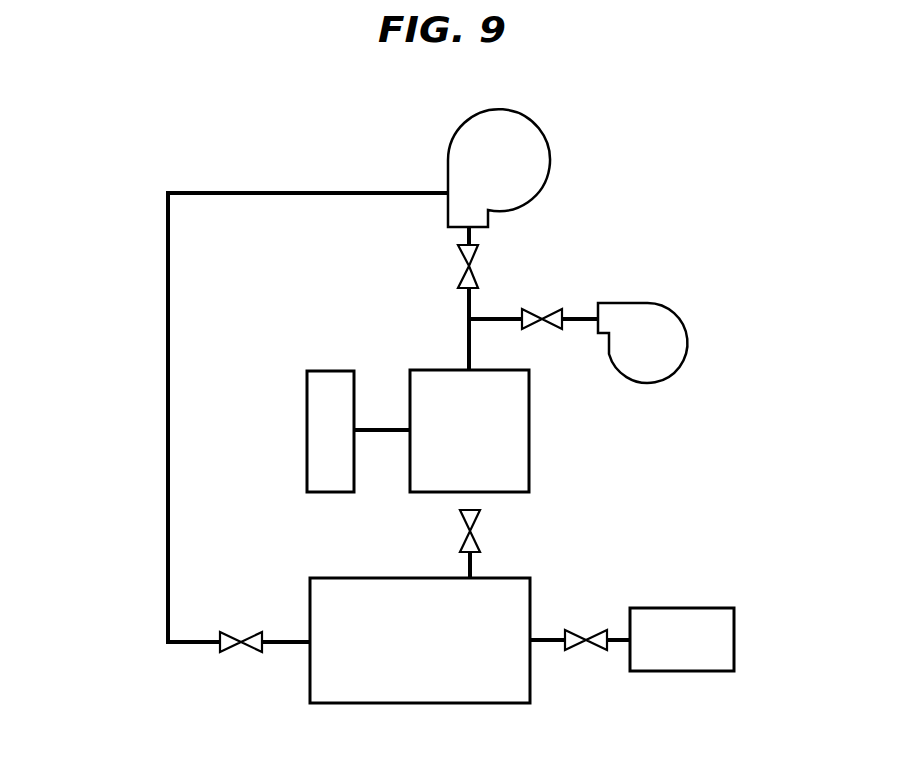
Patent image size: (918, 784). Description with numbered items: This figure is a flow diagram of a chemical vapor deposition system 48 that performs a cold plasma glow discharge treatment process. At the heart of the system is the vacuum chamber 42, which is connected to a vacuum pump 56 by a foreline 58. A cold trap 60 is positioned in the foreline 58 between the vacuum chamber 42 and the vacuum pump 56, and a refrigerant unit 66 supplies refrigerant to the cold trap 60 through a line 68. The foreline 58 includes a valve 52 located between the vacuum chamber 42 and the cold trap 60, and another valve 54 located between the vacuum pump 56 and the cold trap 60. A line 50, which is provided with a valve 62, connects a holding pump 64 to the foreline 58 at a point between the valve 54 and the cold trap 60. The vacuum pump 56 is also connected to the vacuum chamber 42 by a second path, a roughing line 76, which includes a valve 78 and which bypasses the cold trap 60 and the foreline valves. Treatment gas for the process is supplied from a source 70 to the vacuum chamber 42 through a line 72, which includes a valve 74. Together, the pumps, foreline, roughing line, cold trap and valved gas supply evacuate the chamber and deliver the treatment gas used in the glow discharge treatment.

The vacuum chamber 42 is at (458, 704).
The chemical vapor deposition system 48 is at (138, 406).
The line 50 is at (580, 318).
The valve 52 is at (468, 531).
The valve 54 is at (472, 268).
The vacuum pump 56 is at (543, 132).
The foreline 58 is at (472, 568).
The cold trap 60 is at (529, 455).
The valve 62 is at (540, 322).
The holding pump 64 is at (686, 330).
The refrigerant unit 66 is at (307, 438).
The line 68 is at (378, 428).
The source 70 is at (734, 628).
The line 72 is at (548, 643).
The valve 74 is at (588, 634).
The roughing line 76 is at (168, 272).
The valve 78 is at (240, 650).